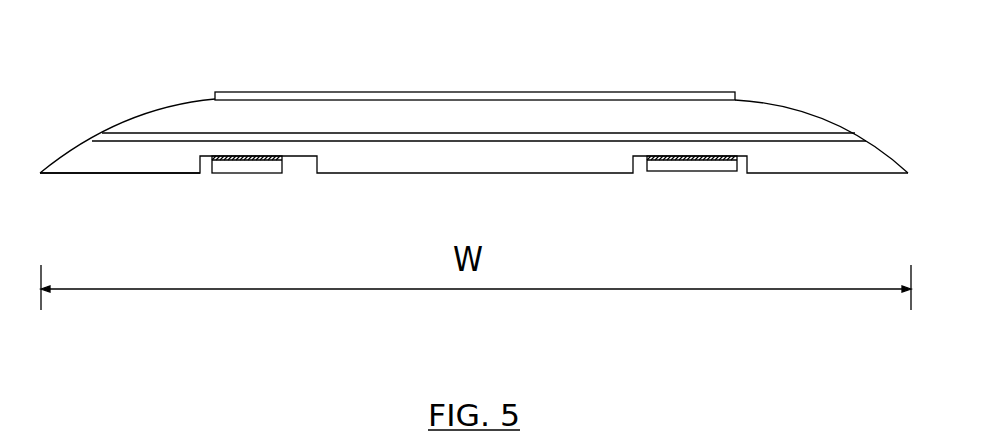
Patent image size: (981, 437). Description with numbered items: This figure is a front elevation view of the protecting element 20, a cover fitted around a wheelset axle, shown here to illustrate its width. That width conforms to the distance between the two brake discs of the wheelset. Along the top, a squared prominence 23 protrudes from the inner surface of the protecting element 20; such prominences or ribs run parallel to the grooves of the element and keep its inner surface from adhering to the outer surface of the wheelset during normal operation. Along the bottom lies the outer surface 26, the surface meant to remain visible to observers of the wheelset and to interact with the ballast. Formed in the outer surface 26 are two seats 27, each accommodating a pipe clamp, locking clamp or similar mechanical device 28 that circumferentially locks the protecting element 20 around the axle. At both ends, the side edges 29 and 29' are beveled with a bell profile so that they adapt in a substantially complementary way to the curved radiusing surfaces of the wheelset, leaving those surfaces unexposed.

The protecting element 20 is at (787, 191).
The prominences 23 is at (425, 92).
The outer surface 26 is at (115, 180).
The seats 27 is at (312, 167).
The mechanical devices 28 is at (690, 171).
The side edge 29 is at (127, 104).
The side edge 29' is at (821, 104).